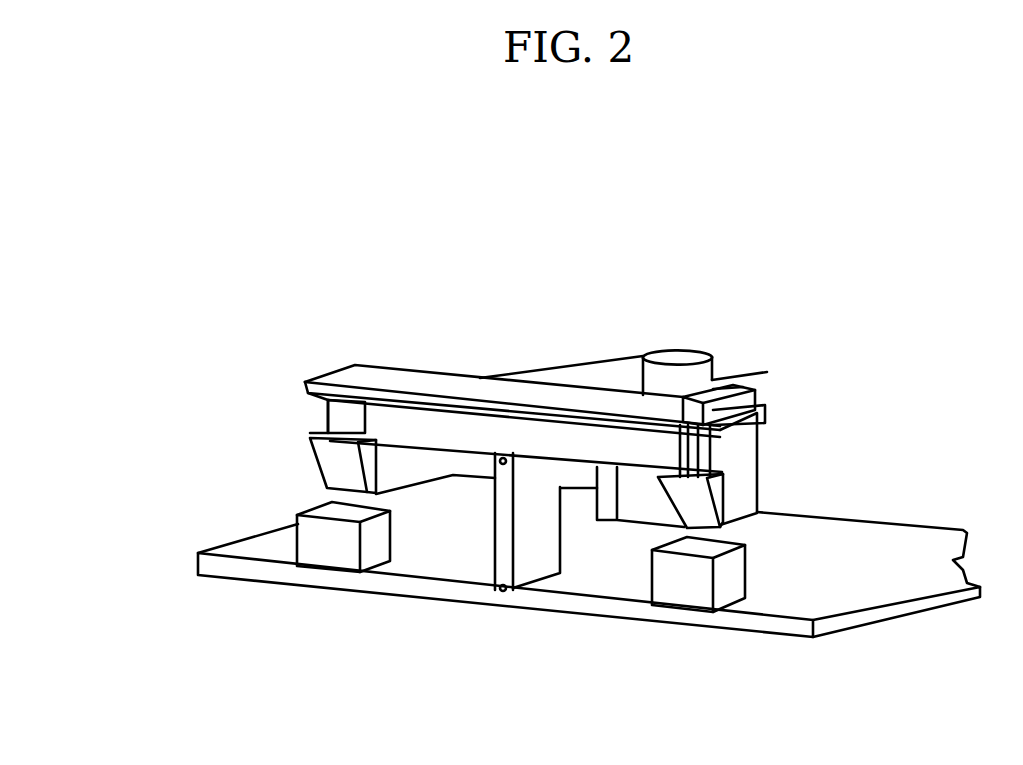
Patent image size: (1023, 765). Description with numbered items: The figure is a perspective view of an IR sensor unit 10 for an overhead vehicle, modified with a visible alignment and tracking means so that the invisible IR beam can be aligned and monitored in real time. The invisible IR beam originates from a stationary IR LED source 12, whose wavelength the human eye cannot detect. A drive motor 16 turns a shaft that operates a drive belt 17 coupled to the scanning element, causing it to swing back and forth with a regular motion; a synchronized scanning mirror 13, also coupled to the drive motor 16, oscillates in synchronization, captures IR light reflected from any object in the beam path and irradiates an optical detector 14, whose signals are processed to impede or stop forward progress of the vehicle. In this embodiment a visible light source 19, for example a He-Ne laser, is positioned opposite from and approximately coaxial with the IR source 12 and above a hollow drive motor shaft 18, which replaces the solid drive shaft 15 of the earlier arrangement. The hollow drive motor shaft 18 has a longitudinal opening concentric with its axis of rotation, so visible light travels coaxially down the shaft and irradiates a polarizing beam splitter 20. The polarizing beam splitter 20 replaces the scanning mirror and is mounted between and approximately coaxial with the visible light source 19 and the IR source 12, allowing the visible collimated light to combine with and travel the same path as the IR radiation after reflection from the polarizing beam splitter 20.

The IR sensor unit 10 is at (161, 278).
The IR LED source 12 is at (680, 578).
The synchronized scanning mirror 13 is at (343, 466).
The optical detector 14 is at (324, 541).
The drive shaft 15 is at (354, 418).
The drive motor 16 is at (697, 376).
The drive belt 17 is at (558, 361).
The hollow drive motor shaft 18 is at (697, 457).
The visible light source 19 is at (707, 392).
The polarizing beam splitter 20 is at (696, 502).